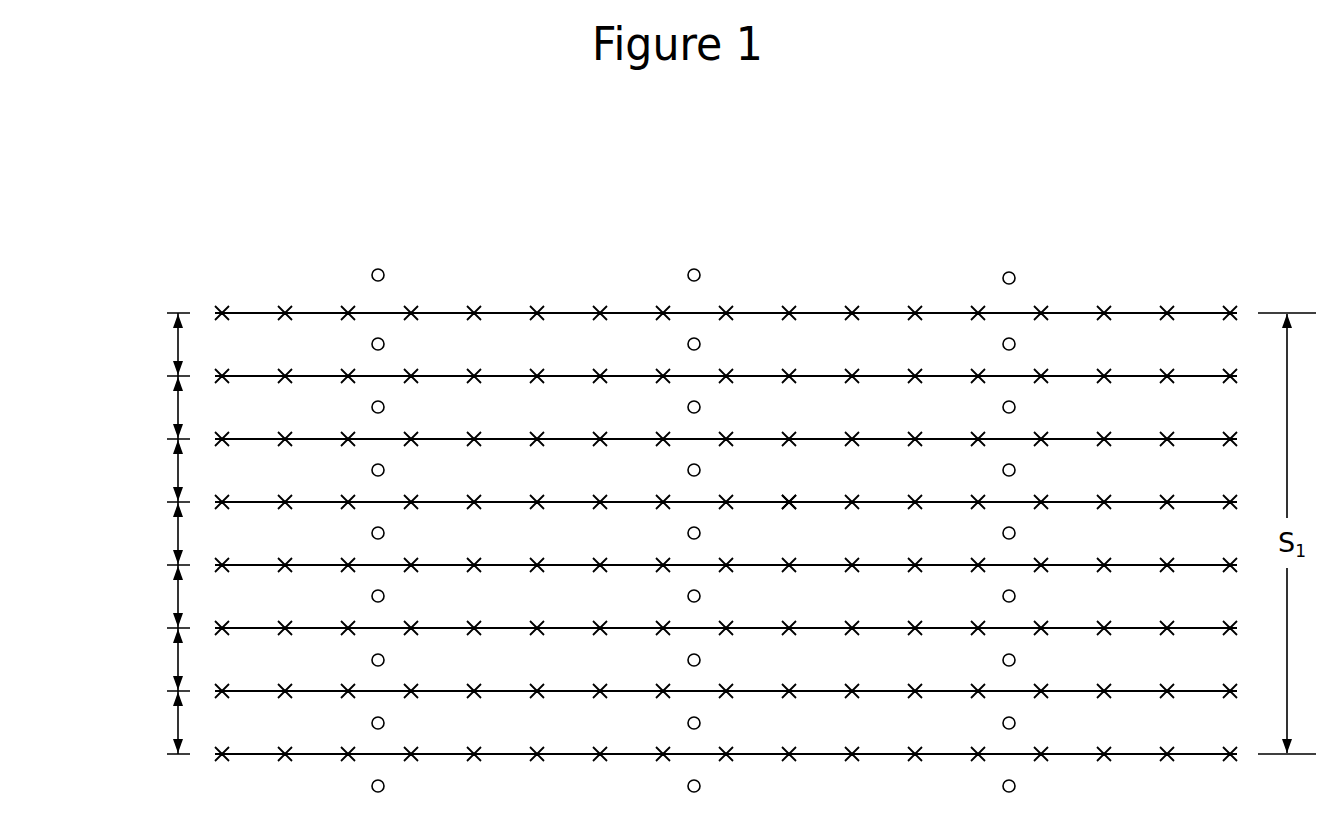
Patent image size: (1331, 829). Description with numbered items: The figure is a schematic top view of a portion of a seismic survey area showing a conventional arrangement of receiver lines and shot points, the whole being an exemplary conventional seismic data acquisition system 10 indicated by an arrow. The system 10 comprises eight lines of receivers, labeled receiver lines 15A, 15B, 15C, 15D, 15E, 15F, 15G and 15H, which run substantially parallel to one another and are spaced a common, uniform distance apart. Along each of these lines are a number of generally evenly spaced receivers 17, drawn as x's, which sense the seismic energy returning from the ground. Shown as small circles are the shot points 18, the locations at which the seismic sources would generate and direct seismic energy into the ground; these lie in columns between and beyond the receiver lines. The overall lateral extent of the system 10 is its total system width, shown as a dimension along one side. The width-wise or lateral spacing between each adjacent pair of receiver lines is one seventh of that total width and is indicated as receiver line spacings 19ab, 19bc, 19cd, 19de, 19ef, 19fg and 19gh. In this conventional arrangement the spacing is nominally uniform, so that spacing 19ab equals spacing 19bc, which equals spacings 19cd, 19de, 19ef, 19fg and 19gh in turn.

The seismic data acquisition system 10 is at (845, 244).
The receiver line 15A is at (498, 313).
The receiver line 15B is at (498, 376).
The receiver line 15C is at (498, 439).
The receiver line 15D is at (505, 502).
The receiver line 15E is at (498, 565).
The receiver line 15F is at (498, 628).
The receiver line 15G is at (498, 691).
The receiver line 15H is at (498, 754).
The receivers 17 is at (789, 502).
The shot points 18 is at (1009, 272).
The receiver line spacing 19ab is at (176, 338).
The receiver line spacing 19bc is at (176, 401).
The receiver line spacing 19cd is at (176, 464).
The receiver line spacing 19de is at (176, 527).
The receiver line spacing 19ef is at (176, 590).
The receiver line spacing 19fg is at (176, 653).
The receiver line spacing 19gh is at (176, 716).